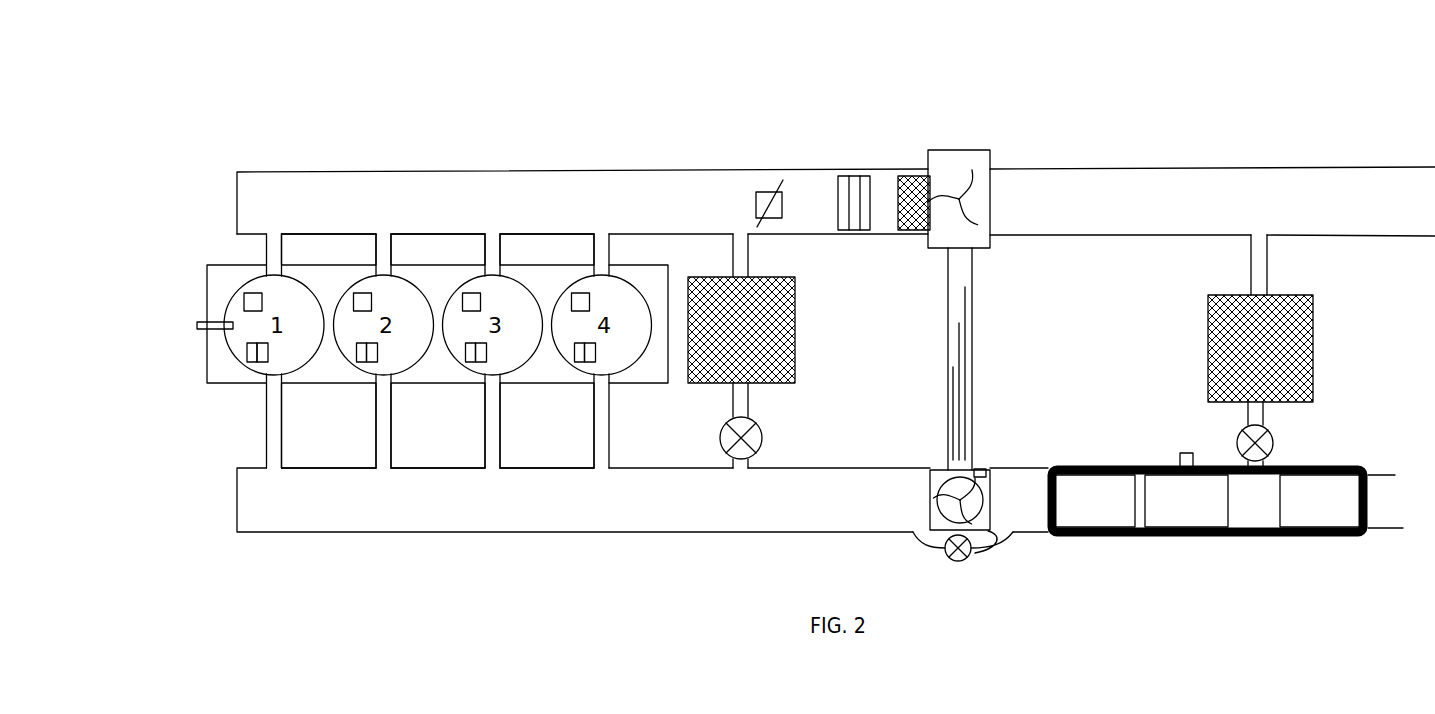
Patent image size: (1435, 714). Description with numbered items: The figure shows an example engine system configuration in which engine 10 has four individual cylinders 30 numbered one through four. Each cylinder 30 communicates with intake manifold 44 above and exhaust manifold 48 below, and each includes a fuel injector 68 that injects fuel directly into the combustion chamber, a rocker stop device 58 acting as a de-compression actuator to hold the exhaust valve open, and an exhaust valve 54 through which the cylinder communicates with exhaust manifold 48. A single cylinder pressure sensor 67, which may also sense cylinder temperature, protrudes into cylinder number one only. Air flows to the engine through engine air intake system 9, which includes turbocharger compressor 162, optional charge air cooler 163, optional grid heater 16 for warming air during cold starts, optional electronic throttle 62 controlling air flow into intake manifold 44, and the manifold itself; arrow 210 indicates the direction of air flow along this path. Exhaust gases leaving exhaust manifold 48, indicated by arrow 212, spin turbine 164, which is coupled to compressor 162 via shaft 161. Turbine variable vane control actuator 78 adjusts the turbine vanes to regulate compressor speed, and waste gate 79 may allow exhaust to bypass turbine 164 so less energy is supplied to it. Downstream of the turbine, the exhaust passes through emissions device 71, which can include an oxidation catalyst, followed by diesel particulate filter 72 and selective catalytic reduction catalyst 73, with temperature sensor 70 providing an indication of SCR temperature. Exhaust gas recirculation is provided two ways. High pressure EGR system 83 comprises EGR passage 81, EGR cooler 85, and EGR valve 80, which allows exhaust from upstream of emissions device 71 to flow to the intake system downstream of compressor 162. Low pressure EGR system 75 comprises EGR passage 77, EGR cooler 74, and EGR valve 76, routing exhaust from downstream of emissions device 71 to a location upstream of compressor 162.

The engine 10 is at (160, 203).
The engine air intake system 9 is at (790, 100).
The grid heater 16 is at (845, 177).
The throttle 62 is at (766, 191).
The charge air cooler 163 is at (913, 176).
The turbocharger compressor 162 is at (960, 150).
The intake air flow direction 210 is at (1076, 203).
The intake manifold 44 is at (462, 219).
The fuel injector 68 is at (252, 295).
The pressure sensor 67 is at (197, 326).
The rocker stop device 58 is at (247, 352).
The combustion chamber 30 is at (242, 365).
The exhaust valve 54 is at (260, 363).
The exhaust manifold 48 is at (322, 512).
The exhaust flow direction 212 is at (593, 502).
The EGR passage 81 is at (740, 255).
The EGR cooler 85 is at (795, 322).
The EGR valve 80 is at (732, 427).
The high pressure EGR system 83 is at (778, 412).
The shaft 161 is at (973, 393).
The turbine 164 is at (937, 470).
The turbine variable vane control actuator 78 is at (982, 470).
The waste gate 79 is at (975, 560).
The EGR passage 77 is at (1258, 262).
The EGR cooler 74 is at (1313, 342).
The low pressure EGR system 75 is at (1352, 368).
The temperature sensor 70 is at (1187, 453).
The EGR valve 76 is at (1273, 437).
The emissions device 71 is at (1093, 501).
The diesel particulate filter 72 is at (1186, 501).
The selective catalytic reduction catalyst 73 is at (1322, 501).